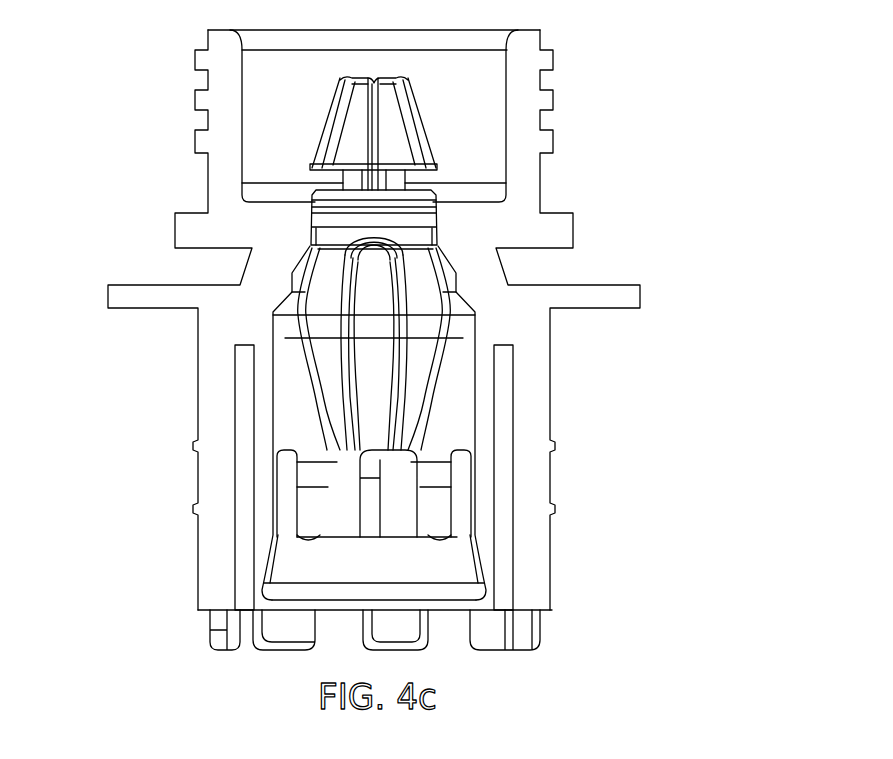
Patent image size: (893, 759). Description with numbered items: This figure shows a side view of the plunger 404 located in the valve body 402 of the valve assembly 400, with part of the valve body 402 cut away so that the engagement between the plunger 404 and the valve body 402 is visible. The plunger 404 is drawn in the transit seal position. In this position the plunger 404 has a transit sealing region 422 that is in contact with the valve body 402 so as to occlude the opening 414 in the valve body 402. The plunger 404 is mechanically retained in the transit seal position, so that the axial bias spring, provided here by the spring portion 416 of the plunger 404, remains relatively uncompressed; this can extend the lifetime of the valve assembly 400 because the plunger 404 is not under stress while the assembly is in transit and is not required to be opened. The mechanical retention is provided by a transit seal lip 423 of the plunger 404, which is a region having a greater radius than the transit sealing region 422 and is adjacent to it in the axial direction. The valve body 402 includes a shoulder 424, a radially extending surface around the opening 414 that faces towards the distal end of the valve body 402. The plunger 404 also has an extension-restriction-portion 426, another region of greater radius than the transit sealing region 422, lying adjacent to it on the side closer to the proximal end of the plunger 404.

The valve assembly 400 is at (414, 340).
The valve body 402 is at (552, 492).
The plunger 404 is at (291, 388).
The opening 414 is at (412, 177).
The spring portion 416 is at (325, 423).
The transit sealing region 422 is at (447, 215).
The transit seal lip 423 is at (440, 211).
The shoulder 424 is at (374, 210).
The extension-restriction-portion 426 is at (308, 211).